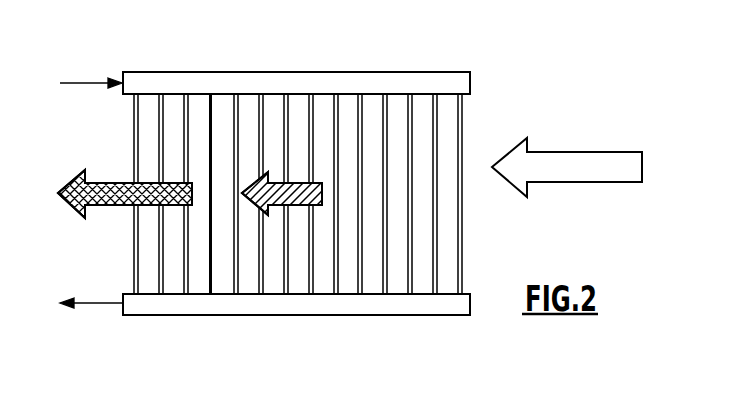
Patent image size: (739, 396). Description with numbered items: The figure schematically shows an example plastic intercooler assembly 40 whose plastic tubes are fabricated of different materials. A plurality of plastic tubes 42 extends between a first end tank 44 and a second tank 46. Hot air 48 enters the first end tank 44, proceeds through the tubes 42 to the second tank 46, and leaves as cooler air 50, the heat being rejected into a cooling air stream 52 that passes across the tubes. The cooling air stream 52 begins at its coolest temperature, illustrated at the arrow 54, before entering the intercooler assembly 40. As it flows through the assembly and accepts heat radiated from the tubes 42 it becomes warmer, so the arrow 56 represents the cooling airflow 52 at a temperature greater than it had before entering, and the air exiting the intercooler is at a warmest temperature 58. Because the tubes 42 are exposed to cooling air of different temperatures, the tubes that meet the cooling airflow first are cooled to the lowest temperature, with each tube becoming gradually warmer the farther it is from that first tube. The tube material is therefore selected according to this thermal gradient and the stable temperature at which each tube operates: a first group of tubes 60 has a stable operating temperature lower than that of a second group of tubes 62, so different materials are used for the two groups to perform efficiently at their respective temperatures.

The intercooler assembly 40 is at (329, 183).
The plastic tubes 42 is at (329, 219).
The first end tank 44 is at (336, 82).
The second tank 46 is at (298, 307).
The hot air 48 is at (88, 83).
The cooler air 50 is at (92, 305).
The cooling air stream 52 is at (567, 155).
The arrow 54 is at (538, 175).
The arrow 56 is at (268, 206).
The warmest temperature 58 is at (110, 207).
The first group of tubes 60 is at (473, 319).
The second group of tubes 62 is at (290, 319).